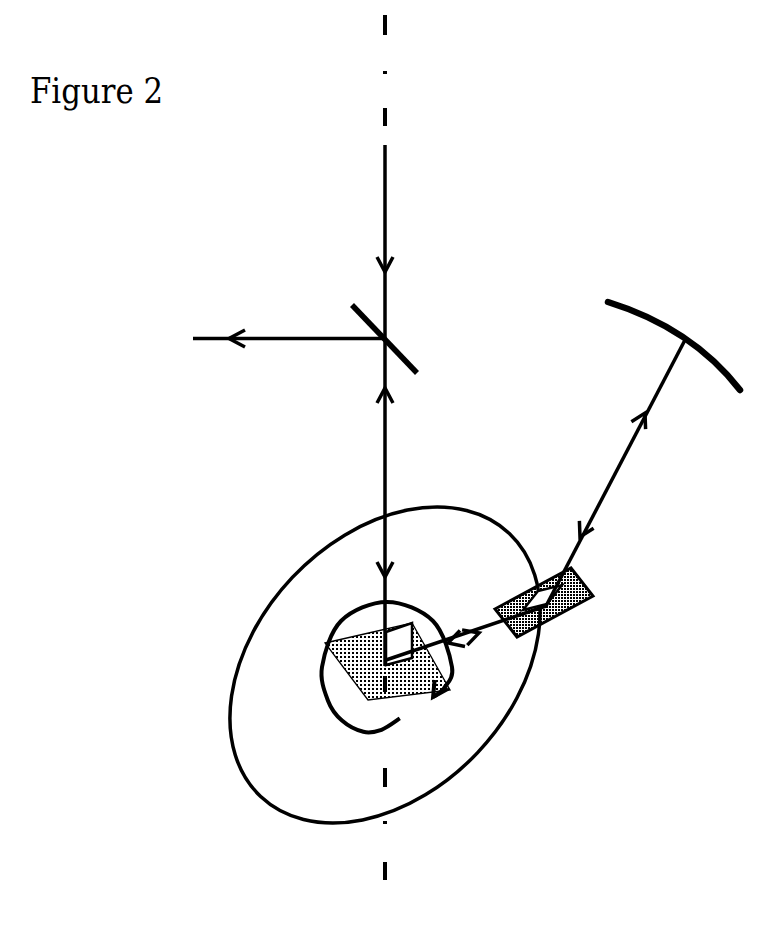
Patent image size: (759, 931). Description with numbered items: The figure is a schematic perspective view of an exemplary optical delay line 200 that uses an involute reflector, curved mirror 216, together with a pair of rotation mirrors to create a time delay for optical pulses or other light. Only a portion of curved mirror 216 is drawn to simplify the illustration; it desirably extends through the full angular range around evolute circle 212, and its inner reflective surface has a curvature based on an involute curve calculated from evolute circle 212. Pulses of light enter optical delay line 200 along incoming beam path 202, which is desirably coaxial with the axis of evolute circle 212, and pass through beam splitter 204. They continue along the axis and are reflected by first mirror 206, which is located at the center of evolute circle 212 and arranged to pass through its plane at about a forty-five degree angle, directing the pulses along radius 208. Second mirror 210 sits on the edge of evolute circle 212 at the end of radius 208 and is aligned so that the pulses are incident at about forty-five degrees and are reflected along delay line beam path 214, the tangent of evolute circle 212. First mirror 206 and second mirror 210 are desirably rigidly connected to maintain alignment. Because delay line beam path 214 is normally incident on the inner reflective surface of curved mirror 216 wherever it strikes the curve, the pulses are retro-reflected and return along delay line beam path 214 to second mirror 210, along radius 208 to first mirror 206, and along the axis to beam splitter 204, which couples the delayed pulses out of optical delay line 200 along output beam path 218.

The optical delay line 200 is at (574, 65).
The incoming beam path 202 is at (385, 248).
The beam splitter 204 is at (397, 351).
The first mirror 206 is at (326, 642).
The radius 208 is at (470, 640).
The second mirror 210 is at (590, 605).
The evolute circle 212 is at (236, 768).
The delay line beam path 214 is at (607, 482).
The curved mirror 216 is at (670, 322).
The output beam path 218 is at (263, 337).